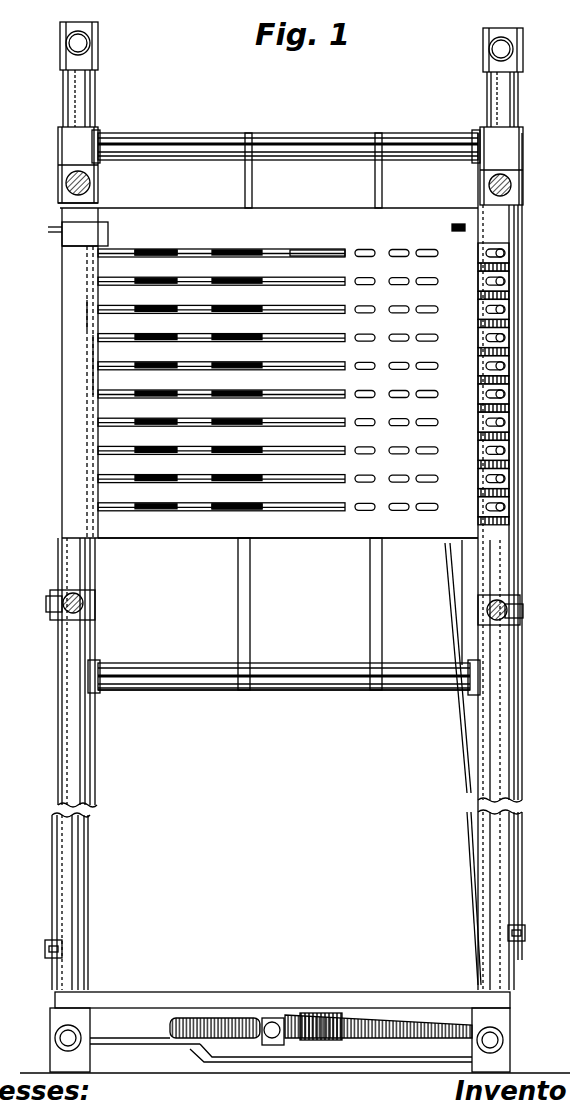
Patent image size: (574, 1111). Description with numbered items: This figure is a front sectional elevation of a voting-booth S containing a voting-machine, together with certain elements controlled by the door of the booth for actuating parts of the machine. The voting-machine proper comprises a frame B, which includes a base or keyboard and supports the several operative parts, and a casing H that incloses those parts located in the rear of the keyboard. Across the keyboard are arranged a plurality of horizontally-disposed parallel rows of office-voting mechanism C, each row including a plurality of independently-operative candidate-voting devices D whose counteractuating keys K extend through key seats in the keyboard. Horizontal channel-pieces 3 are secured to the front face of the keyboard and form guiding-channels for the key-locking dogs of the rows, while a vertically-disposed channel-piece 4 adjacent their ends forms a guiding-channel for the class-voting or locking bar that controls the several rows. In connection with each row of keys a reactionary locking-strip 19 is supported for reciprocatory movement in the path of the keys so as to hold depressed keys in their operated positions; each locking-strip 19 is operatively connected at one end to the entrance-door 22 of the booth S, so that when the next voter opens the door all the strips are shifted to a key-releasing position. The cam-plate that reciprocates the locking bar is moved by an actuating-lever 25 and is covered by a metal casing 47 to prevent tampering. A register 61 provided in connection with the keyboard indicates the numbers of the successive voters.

The actuating-lever 25 is at (69, 236).
The metal casing 47 is at (85, 233).
The vertically-disposed channel-piece 4 is at (90, 300).
The office-voting mechanism C is at (95, 393).
The channel-piece 3 is at (220, 236).
The candidate-voting device D is at (162, 249).
The key K is at (317, 242).
The frame B is at (413, 461).
The register 61 is at (456, 223).
The entrance-door 22 is at (511, 190).
The locking-strip 19 is at (509, 288).
The casing H is at (333, 540).
The booth S is at (284, 743).